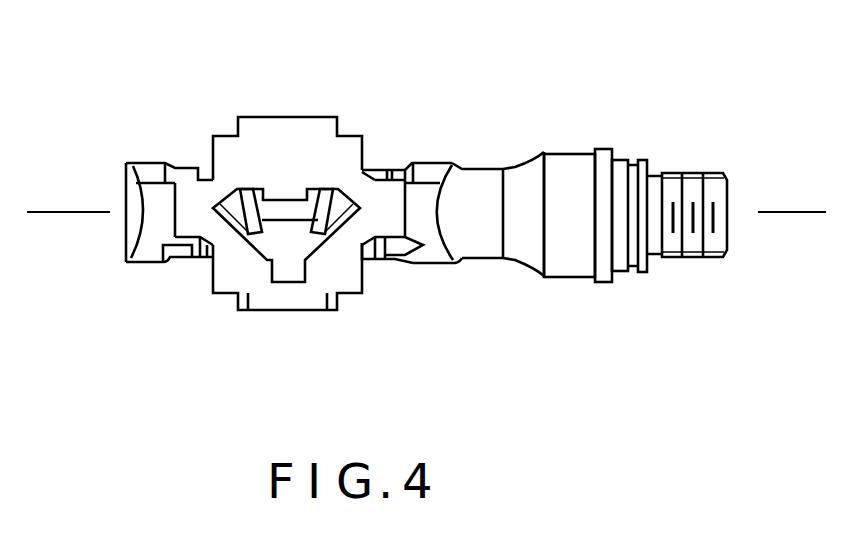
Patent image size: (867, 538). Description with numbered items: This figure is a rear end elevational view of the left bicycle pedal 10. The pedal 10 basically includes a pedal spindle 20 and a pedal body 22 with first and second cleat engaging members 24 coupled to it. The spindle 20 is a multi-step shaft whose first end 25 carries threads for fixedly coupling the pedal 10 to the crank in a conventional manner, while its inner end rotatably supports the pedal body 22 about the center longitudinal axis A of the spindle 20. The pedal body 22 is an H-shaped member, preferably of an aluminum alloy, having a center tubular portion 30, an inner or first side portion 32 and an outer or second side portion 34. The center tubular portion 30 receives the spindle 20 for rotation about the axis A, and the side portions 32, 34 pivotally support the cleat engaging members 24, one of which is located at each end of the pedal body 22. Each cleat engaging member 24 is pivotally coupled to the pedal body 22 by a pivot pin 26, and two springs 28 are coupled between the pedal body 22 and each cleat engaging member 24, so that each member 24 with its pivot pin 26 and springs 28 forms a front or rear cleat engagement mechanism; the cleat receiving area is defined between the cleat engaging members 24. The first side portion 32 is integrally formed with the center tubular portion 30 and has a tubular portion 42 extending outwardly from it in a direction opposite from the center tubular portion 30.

The bicycle pedal 10 is at (448, 96).
The pedal spindle 20 is at (641, 158).
The pedal body 22 is at (137, 265).
The cleat engaging member 24 is at (208, 142).
The first end 25 is at (698, 172).
The pivot pin 26 is at (285, 207).
The spring 28 is at (318, 233).
The center tubular portion 30 is at (368, 262).
The first side portion 32 is at (432, 265).
The second side portion 34 is at (128, 164).
The tubular portion 42 is at (483, 258).
The center longitudinal axis A is at (787, 212).